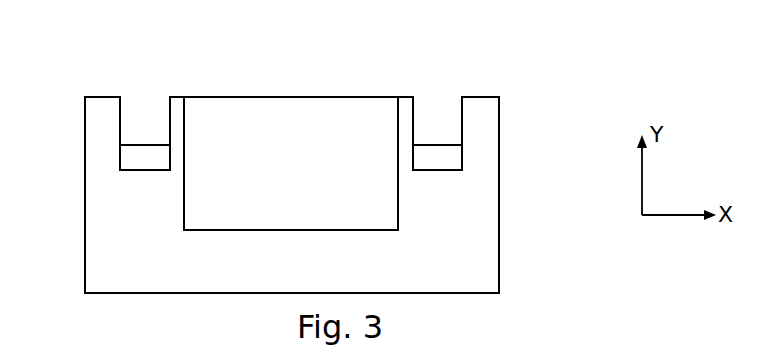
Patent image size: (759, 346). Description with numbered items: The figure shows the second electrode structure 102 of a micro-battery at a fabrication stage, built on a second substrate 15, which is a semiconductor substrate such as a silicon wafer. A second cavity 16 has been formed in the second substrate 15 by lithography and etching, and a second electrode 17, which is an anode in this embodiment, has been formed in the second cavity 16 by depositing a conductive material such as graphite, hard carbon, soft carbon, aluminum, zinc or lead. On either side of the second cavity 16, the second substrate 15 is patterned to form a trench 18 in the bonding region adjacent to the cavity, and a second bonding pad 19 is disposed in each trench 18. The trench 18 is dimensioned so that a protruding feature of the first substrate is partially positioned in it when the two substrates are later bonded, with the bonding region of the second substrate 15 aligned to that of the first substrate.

The second electrode structure 102 is at (573, 60).
The second substrate 15 is at (490, 233).
The second cavity 16 is at (184, 132).
The second electrode 17 is at (296, 118).
The trench 18 is at (147, 118).
The second bonding pad 19 is at (130, 159).